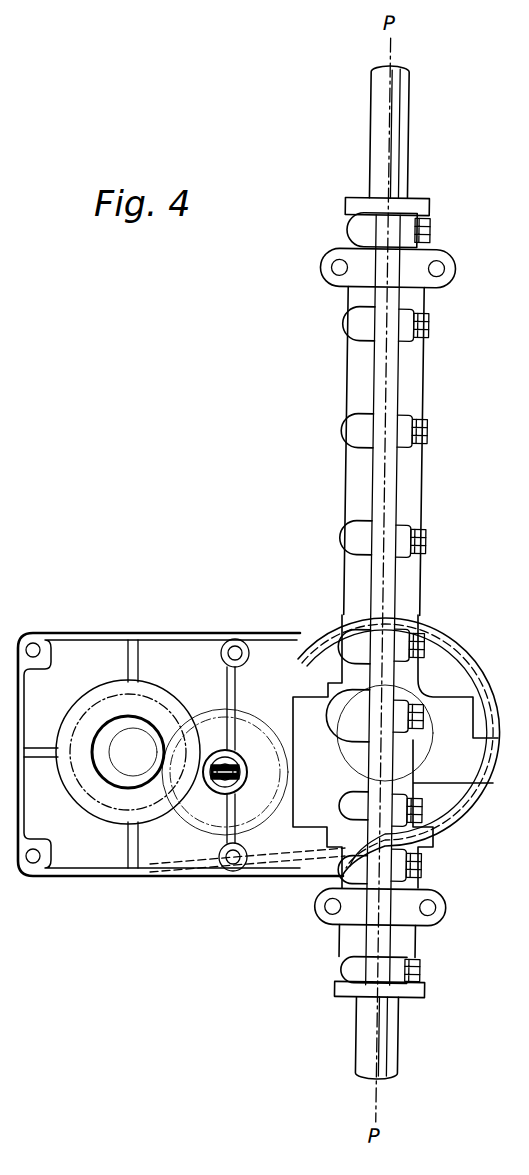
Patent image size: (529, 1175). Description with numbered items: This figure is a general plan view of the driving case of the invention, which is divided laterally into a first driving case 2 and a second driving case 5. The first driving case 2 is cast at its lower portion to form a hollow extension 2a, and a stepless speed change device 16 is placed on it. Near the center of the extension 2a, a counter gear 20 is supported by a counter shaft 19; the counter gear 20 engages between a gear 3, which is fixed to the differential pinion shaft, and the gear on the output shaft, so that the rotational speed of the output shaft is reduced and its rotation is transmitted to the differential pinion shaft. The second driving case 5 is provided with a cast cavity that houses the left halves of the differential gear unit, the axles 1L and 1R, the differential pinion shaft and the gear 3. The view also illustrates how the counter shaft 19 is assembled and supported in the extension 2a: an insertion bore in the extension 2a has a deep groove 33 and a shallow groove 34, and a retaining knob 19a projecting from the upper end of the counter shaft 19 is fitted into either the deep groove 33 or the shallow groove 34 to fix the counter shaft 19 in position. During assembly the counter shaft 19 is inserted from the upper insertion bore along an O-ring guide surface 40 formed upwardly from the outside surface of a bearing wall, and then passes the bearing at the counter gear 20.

The axle 1R is at (402, 141).
The axle 1L is at (404, 1041).
The first driving case 2 is at (342, 524).
The hollow extension 2a is at (146, 631).
The gear 3 is at (308, 842).
The second driving case 5 is at (428, 538).
The stepless speed change device 16 is at (92, 706).
The counter shaft 19 is at (228, 792).
The retaining knob 19a is at (190, 842).
The counter gear 20 is at (282, 841).
The deep groove 33 is at (220, 751).
The shallow groove 34 is at (250, 772).
The O-ring guide surface 40 is at (238, 748).